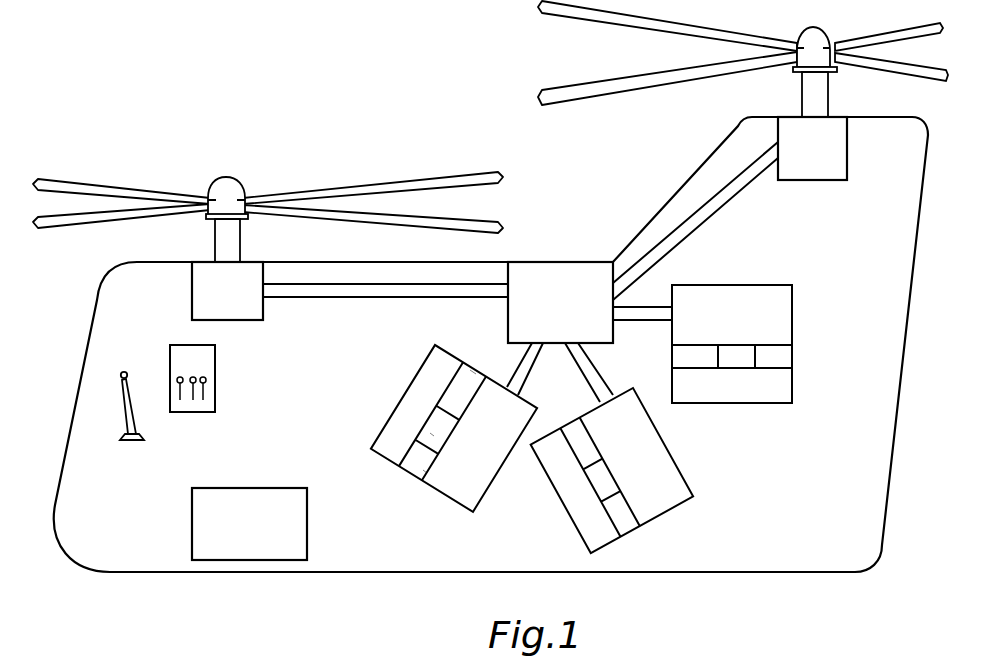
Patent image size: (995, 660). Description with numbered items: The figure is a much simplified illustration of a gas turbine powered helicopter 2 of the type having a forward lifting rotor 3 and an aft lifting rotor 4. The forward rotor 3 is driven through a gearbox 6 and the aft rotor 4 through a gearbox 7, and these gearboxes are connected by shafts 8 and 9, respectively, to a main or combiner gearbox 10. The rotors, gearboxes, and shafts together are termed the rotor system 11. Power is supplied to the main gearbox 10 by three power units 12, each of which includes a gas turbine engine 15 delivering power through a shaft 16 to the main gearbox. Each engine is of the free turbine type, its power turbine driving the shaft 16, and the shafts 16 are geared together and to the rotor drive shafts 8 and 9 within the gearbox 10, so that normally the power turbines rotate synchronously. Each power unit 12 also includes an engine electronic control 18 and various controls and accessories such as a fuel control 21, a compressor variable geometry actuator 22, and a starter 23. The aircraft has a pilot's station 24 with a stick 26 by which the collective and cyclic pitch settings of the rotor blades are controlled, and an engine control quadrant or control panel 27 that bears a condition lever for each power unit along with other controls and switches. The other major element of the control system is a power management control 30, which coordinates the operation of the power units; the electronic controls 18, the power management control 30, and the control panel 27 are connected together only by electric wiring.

The helicopter 2 is at (94, 295).
The forward lifting rotor 3 is at (258, 205).
The aft lifting rotor 4 is at (683, 32).
The gearbox 6 is at (192, 293).
The gearbox 7 is at (840, 150).
The shaft 8 is at (393, 298).
The shaft 9 is at (697, 222).
The main or combiner gearbox 10 is at (583, 267).
The rotor system 11 is at (498, 107).
The power unit 12 is at (425, 490).
The gas turbine engine 15 is at (493, 467).
The shaft 16 is at (573, 352).
The engine electronic control 18 is at (405, 397).
The fuel control 21 is at (473, 378).
The compressor variable geometry actuator 22 is at (432, 437).
The starter 23 is at (425, 473).
The pilot's station 24 is at (197, 437).
The stick 26 is at (123, 408).
The engine control quadrant or control panel 27 is at (215, 355).
The power management control 30 is at (192, 510).